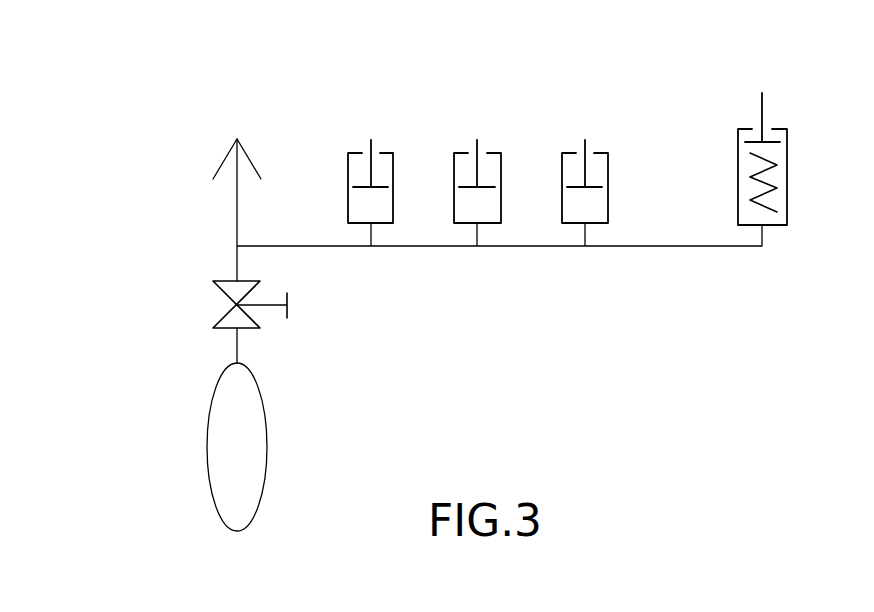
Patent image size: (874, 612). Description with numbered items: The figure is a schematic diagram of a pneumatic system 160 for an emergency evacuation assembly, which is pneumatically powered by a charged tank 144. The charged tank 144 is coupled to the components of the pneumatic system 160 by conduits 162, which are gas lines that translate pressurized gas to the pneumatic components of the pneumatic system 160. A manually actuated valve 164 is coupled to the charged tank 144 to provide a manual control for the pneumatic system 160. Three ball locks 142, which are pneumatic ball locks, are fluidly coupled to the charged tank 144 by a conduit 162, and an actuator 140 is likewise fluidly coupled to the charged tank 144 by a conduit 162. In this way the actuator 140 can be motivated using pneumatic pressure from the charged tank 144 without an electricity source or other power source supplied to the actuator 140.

The pneumatic system 160 is at (136, 118).
The conduits 162 is at (237, 346).
The manually actuated valve 164 is at (215, 279).
The charged tank 144 is at (243, 473).
The ball locks 142 is at (572, 150).
The actuator 140 is at (787, 185).